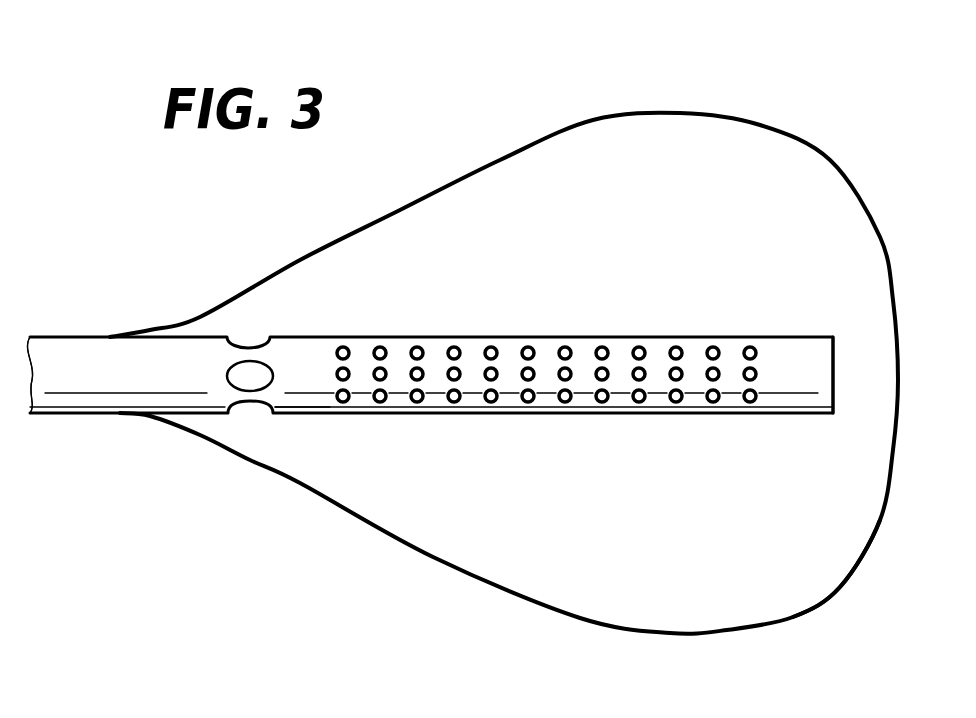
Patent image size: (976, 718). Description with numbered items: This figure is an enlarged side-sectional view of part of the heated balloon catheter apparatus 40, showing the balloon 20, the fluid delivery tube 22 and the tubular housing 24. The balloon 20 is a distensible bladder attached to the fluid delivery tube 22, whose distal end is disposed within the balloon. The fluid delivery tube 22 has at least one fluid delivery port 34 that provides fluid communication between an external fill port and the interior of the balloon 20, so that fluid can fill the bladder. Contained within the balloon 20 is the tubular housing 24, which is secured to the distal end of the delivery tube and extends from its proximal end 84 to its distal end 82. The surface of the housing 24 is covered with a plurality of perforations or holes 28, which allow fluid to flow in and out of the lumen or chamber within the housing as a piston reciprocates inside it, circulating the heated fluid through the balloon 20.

The balloon 20 is at (597, 113).
The fluid delivery tube 22 is at (65, 380).
The tubular housing 24 is at (658, 337).
The perforations or holes 28 is at (566, 347).
The fluid delivery port 34 is at (253, 350).
The heated balloon catheter apparatus 40 is at (805, 621).
The distal end of the housing 82 is at (791, 384).
The proximal end of the housing 84 is at (313, 395).